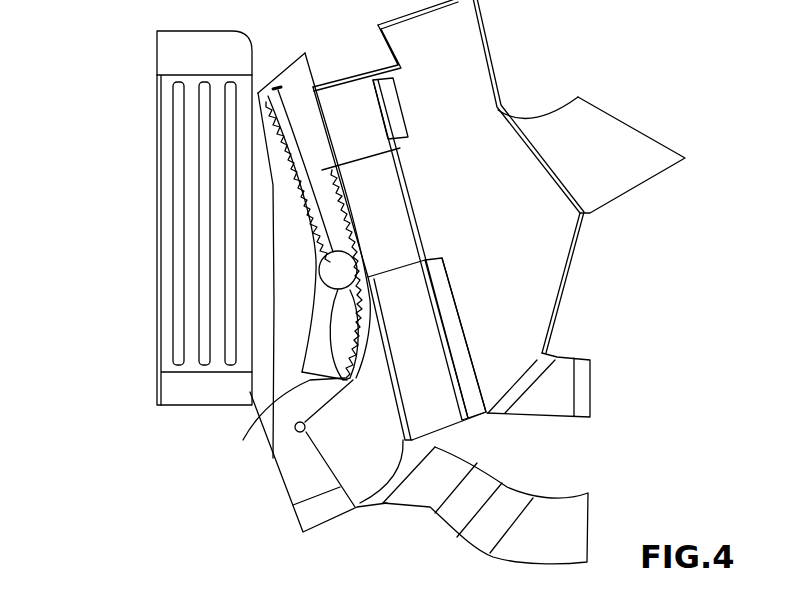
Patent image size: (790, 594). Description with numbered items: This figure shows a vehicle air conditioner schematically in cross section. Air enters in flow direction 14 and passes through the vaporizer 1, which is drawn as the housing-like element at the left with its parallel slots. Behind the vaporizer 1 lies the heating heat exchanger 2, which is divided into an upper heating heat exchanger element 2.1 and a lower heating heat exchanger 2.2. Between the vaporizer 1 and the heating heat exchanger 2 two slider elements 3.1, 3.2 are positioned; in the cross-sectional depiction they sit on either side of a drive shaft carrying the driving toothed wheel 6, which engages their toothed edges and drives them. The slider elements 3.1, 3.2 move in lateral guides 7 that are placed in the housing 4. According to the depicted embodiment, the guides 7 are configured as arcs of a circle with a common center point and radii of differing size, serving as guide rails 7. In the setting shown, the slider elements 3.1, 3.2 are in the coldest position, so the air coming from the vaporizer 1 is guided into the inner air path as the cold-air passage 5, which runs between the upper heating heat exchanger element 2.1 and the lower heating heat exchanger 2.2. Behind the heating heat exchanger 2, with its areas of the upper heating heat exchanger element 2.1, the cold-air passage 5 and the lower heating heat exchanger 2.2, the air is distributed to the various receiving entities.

The vaporizer 1 is at (190, 327).
The heating heat exchanger 2 is at (447, 392).
The upper heating heat exchanger element 2.1 is at (378, 112).
The lower heating heat exchanger 2.2 is at (433, 277).
The slider element 3.1 is at (270, 113).
The slider element 3.2 is at (318, 366).
The housing 4 is at (262, 485).
The cold-air passage 5 is at (405, 194).
The driving toothed wheel 6 is at (303, 268).
The guides 7 is at (270, 164).
The flow direction 14 is at (115, 210).